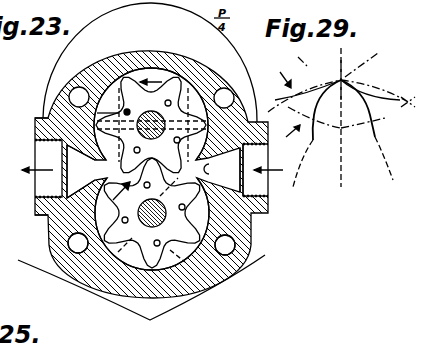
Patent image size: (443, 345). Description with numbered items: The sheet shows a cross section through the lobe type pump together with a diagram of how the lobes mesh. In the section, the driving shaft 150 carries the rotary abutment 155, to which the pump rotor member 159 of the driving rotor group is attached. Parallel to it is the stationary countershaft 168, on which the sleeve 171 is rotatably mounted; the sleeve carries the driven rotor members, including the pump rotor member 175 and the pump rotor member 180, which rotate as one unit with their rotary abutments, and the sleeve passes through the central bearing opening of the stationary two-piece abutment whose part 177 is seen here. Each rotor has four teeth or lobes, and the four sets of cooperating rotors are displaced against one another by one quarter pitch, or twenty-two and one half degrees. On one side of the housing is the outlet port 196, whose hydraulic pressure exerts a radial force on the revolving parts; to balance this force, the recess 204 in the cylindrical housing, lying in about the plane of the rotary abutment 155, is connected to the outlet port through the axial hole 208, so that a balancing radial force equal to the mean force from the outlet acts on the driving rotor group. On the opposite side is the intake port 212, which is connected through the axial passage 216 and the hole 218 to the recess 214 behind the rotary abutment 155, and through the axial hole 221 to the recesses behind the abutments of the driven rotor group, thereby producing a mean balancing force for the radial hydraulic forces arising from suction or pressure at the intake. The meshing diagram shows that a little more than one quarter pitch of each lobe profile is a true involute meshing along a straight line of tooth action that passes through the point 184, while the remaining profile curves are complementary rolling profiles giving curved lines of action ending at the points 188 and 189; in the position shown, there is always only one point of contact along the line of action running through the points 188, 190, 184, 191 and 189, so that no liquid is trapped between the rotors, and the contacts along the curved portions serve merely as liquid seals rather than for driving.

In FIG. 23, the axial hole 221 is at (52, 84).
In FIG. 23, the pump rotor member 175 is at (97, 113).
In FIG. 23, the pump rotor member 180 is at (136, 66).
In FIG. 29, the pump rotor member 180 is at (384, 99).
In FIG. 23, the stationary countershaft 168 is at (172, 75).
In FIG. 23, the sleeve 171 is at (156, 110).
In FIG. 23, the stationary two-piece abutment part 177 is at (47, 132).
In FIG. 23, the outlet port 196 is at (100, 167).
In FIG. 23, the driving shaft 150 is at (151, 213).
In FIG. 23, the intake port 212 is at (236, 157).
In FIG. 23, the axial passage 216 is at (206, 171).
In FIG. 23, the recess 214 is at (47, 233).
In FIG. 23, the hole 218 is at (82, 240).
In FIG. 23, the rotary abutment 155 is at (115, 255).
In FIG. 23, the pump rotor member 159 is at (181, 297).
In FIG. 29, the pump rotor member 159 is at (368, 137).
In FIG. 23, the axial hole 208 is at (230, 250).
In FIG. 23, the recess 204 is at (212, 288).
In FIG. 29, the line of action point 190 is at (322, 77).
In FIG. 29, the line of action point 188 is at (368, 63).
In FIG. 29, the line of tooth action point 184 is at (331, 120).
In FIG. 29, the line of action point 191 is at (351, 125).
In FIG. 29, the line of action point 189 is at (335, 133).